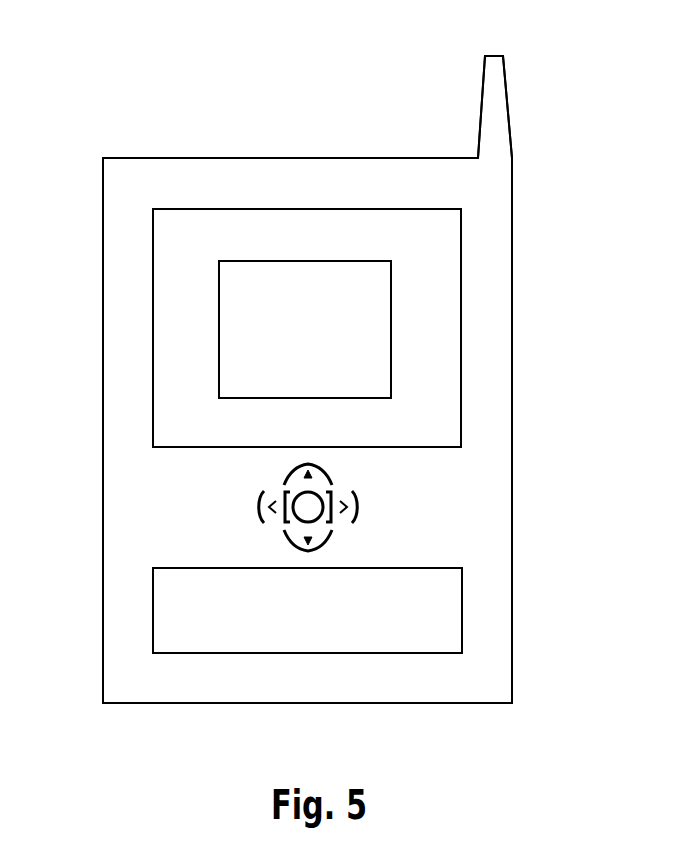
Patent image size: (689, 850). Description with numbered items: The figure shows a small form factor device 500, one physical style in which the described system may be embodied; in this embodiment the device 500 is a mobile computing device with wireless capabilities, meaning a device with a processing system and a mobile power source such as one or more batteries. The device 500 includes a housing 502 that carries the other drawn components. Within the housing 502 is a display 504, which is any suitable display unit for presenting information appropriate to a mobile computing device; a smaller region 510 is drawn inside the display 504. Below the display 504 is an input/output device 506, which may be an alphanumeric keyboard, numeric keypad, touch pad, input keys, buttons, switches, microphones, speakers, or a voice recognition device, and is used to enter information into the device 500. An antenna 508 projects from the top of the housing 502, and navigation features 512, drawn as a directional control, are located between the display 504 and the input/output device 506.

The small form factor device 500 is at (113, 64).
The housing 502 is at (512, 430).
The display 504 is at (461, 226).
The input/output (I/O) device 506 is at (462, 601).
The antenna 508 is at (483, 100).
The display window 510 is at (391, 349).
The navigation features 512 is at (388, 491).